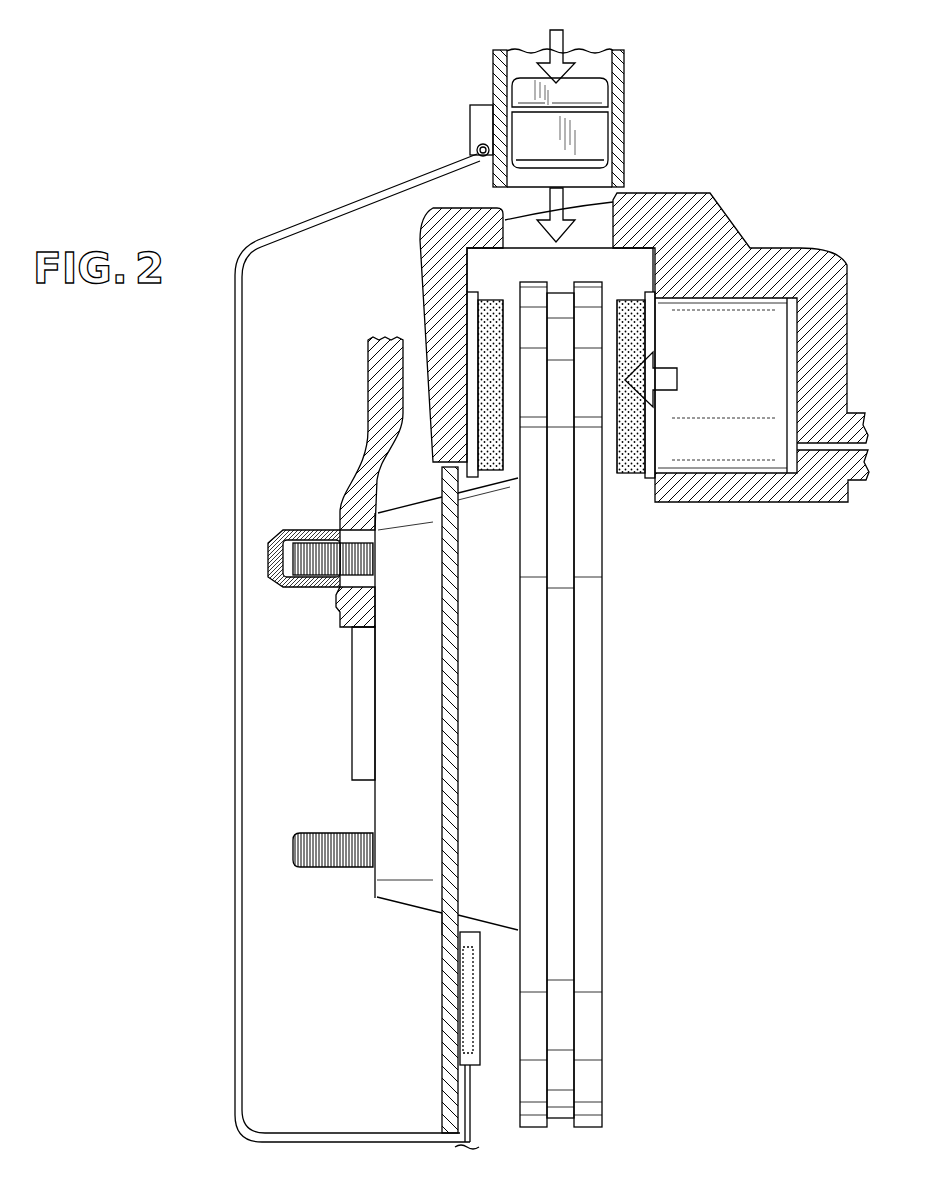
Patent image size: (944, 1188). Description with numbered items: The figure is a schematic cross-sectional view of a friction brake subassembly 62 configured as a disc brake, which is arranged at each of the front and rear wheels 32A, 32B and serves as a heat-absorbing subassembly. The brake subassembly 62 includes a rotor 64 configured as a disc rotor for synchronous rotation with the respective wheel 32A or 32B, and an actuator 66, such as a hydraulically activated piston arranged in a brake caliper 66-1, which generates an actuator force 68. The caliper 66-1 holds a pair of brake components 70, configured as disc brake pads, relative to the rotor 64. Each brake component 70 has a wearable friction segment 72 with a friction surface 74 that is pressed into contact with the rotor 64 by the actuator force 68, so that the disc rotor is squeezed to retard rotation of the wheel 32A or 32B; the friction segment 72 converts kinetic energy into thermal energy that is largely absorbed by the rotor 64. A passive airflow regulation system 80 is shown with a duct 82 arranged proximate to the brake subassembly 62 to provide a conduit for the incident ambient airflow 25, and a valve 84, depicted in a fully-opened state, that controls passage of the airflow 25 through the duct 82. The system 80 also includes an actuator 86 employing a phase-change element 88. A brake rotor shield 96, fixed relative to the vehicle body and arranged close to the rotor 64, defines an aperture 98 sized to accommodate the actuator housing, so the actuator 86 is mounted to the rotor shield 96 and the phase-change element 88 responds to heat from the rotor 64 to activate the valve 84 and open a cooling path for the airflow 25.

The incident ambient airflow 25 is at (557, 38).
The front wheel 32A is at (307, 496).
The rear wheel 32B is at (333, 850).
The friction brake subassembly 62 is at (808, 197).
The rotor 64 is at (588, 597).
The actuator 66 is at (747, 323).
The brake caliper 66-1 is at (433, 257).
The actuator force 68 is at (660, 367).
The brake component 70 is at (507, 455).
The friction segment 72 is at (490, 437).
The friction surface 74 is at (503, 428).
The passive airflow regulation system 80 is at (232, 200).
The duct 82 is at (619, 97).
The valve 84 is at (528, 92).
The actuator 86 is at (480, 1010).
The phase-change element 88 is at (460, 976).
The brake rotor shield 96 is at (442, 790).
The aperture 98 is at (442, 923).